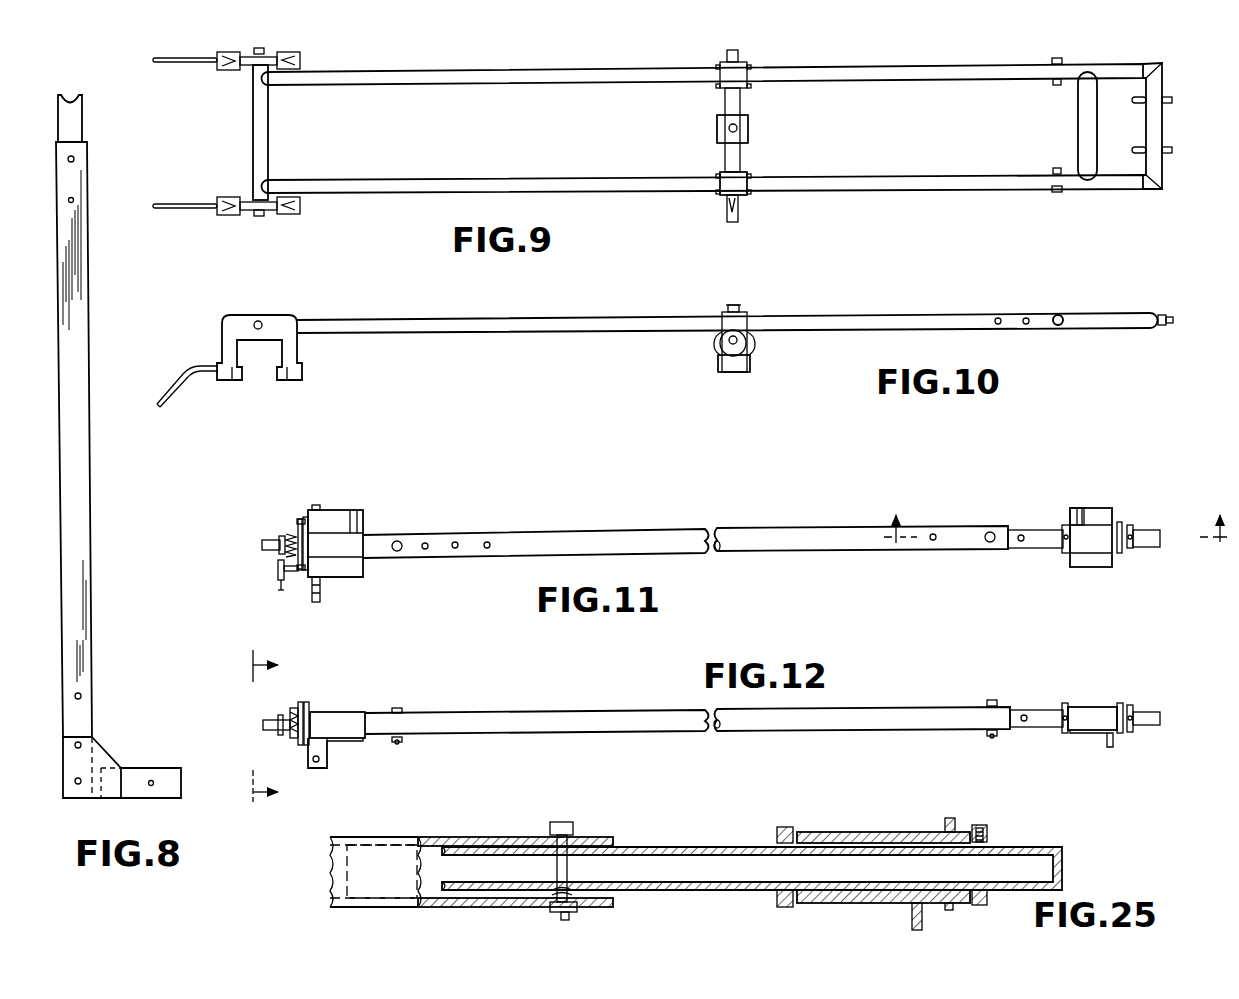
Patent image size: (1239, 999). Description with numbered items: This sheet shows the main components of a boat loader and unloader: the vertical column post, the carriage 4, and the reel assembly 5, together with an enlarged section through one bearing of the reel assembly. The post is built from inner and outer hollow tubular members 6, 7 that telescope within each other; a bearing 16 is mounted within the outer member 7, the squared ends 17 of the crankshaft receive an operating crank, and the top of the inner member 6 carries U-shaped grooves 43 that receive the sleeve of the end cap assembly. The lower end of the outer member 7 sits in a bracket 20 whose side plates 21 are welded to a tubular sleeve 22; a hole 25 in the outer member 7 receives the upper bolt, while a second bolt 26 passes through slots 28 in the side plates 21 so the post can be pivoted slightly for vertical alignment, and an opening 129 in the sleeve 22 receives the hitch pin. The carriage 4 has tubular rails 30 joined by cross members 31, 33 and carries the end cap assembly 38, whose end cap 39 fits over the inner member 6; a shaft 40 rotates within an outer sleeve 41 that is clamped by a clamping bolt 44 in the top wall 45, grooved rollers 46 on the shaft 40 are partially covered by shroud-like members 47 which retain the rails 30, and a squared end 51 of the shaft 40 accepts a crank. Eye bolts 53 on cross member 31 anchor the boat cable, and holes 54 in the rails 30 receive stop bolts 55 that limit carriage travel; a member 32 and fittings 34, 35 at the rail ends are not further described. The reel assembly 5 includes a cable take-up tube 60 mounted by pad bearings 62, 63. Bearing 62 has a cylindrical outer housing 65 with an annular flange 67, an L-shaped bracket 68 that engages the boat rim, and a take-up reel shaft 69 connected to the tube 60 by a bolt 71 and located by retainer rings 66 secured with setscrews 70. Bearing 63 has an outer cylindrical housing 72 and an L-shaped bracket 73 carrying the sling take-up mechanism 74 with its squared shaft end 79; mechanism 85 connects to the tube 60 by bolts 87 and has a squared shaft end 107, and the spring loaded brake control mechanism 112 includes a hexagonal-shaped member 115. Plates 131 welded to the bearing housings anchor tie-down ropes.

In FIG. 9, the carriage 4 is at (632, 66).
In FIG. 11, the reel assembly 5 is at (758, 527).
In FIG. 8, the inner hollow tubular member 6 is at (77, 129).
In FIG. 8, the outer hollow tubular member 7 is at (84, 492).
In FIG. 12, the bearing 16 is at (250, 726).
In FIG. 8, the crankshaft ends 17 is at (82, 694).
In FIG. 8, the bracket 20 is at (112, 745).
In FIG. 8, the side plates 21 is at (70, 771).
In FIG. 8, the tubular sleeve 22 is at (138, 770).
In FIG. 11, the hole in outer member 25 is at (1056, 518).
In FIG. 8, the second bolt 26 is at (46, 748).
In FIG. 8, the slots 28 is at (75, 782).
In FIG. 9, the tubular rails 30 is at (470, 71).
In FIG. 10, the tubular rails 30 is at (577, 334).
In FIG. 9, the cross member 31 is at (1164, 130).
In FIG. 9, the cross member 32 is at (269, 128).
In FIG. 9, the cross member 33 is at (1080, 130).
In FIG. 9, the clamp 34 is at (268, 52).
In FIG. 10, the clamp 34 is at (233, 322).
In FIG. 9, the bolt hole 35 is at (262, 216).
In FIG. 10, the bolt hole 35 is at (261, 325).
In FIG. 9, the end cap assembly 38 is at (756, 124).
In FIG. 10, the end cap assembly 38 is at (752, 313).
In FIG. 9, the end cap 39 is at (716, 130).
In FIG. 10, the end cap 39 is at (733, 373).
In FIG. 10, the shaft 40 is at (741, 341).
In FIG. 9, the outer sleeve 41 is at (740, 153).
In FIG. 8, the U-shaped grooves 43 is at (70, 100).
In FIG. 10, the clamping bolt 44 is at (730, 305).
In FIG. 9, the top wall 45 is at (746, 133).
In FIG. 9, the grooved rollers 46 is at (720, 175).
In FIG. 10, the grooved rollers 46 is at (722, 354).
In FIG. 9, the shroud-like members 47 is at (740, 65).
In FIG. 9, the squared shaft end 51 is at (727, 218).
In FIG. 9, the eye bolts 53 is at (1170, 97).
In FIG. 10, the eye bolts 53 is at (1172, 316).
In FIG. 10, the aligned holes 54 is at (1027, 324).
In FIG. 9, the stop bolts 55 is at (1060, 58).
In FIG. 10, the stop bolts 55 is at (1062, 317).
In FIG. 11, the cable take-up tube 60 is at (835, 543).
In FIG. 12, the cable take-up tube 60 is at (630, 712).
In FIG. 25, the cable take-up tube 60 is at (497, 836).
In FIG. 11, the pad bearing 62 is at (1088, 545).
In FIG. 12, the pad bearing 62 is at (1090, 712).
In FIG. 25, the pad bearing 62 is at (877, 831).
In FIG. 11, the pad bearing 63 is at (352, 545).
In FIG. 12, the pad bearing 63 is at (345, 715).
In FIG. 25, the cylindrical outer housing 65 is at (820, 832).
In FIG. 11, the retainer rings 66 is at (1130, 530).
In FIG. 12, the retainer rings 66 is at (1063, 706).
In FIG. 25, the retainer rings 66 is at (780, 828).
In FIG. 11, the annular flange 67 is at (1120, 554).
In FIG. 12, the annular flange 67 is at (1120, 705).
In FIG. 25, the annular flange 67 is at (950, 818).
In FIG. 11, the L-shaped bracket 68 is at (1077, 515).
In FIG. 12, the L-shaped bracket 68 is at (1115, 744).
In FIG. 25, the L-shaped bracket 68 is at (813, 908).
In FIG. 11, the take-up reel shaft 69 is at (1027, 549).
In FIG. 12, the take-up reel shaft 69 is at (1040, 728).
In FIG. 25, the take-up reel shaft 69 is at (687, 845).
In FIG. 11, the setscrews 70 is at (1063, 541).
In FIG. 25, the setscrews 70 is at (980, 826).
In FIG. 11, the bolt 71 is at (988, 532).
In FIG. 12, the bolt 71 is at (991, 700).
In FIG. 25, the bolt 71 is at (575, 822).
In FIG. 11, the outer cylindrical housing 72 is at (337, 535).
In FIG. 12, the outer cylindrical housing 72 is at (330, 712).
In FIG. 11, the L-shaped boat rim engaging bracket 73 is at (350, 572).
In FIG. 12, the L-shaped boat rim engaging bracket 73 is at (345, 742).
In FIG. 12, the sling take-up mechanism 74 is at (326, 769).
In FIG. 11, the squared shaft end 79 is at (320, 600).
In FIG. 11, the mechanism 85 is at (284, 531).
In FIG. 12, the bolts 87 is at (402, 708).
In FIG. 11, the squared outer end 107 is at (262, 545).
In FIG. 11, the spring loaded brake control mechanism 112 is at (278, 571).
In FIG. 12, the hexagonal-shaped member 115 is at (276, 729).
In FIG. 8, the opening 129 is at (153, 786).
In FIG. 11, the plate 131 is at (358, 521).